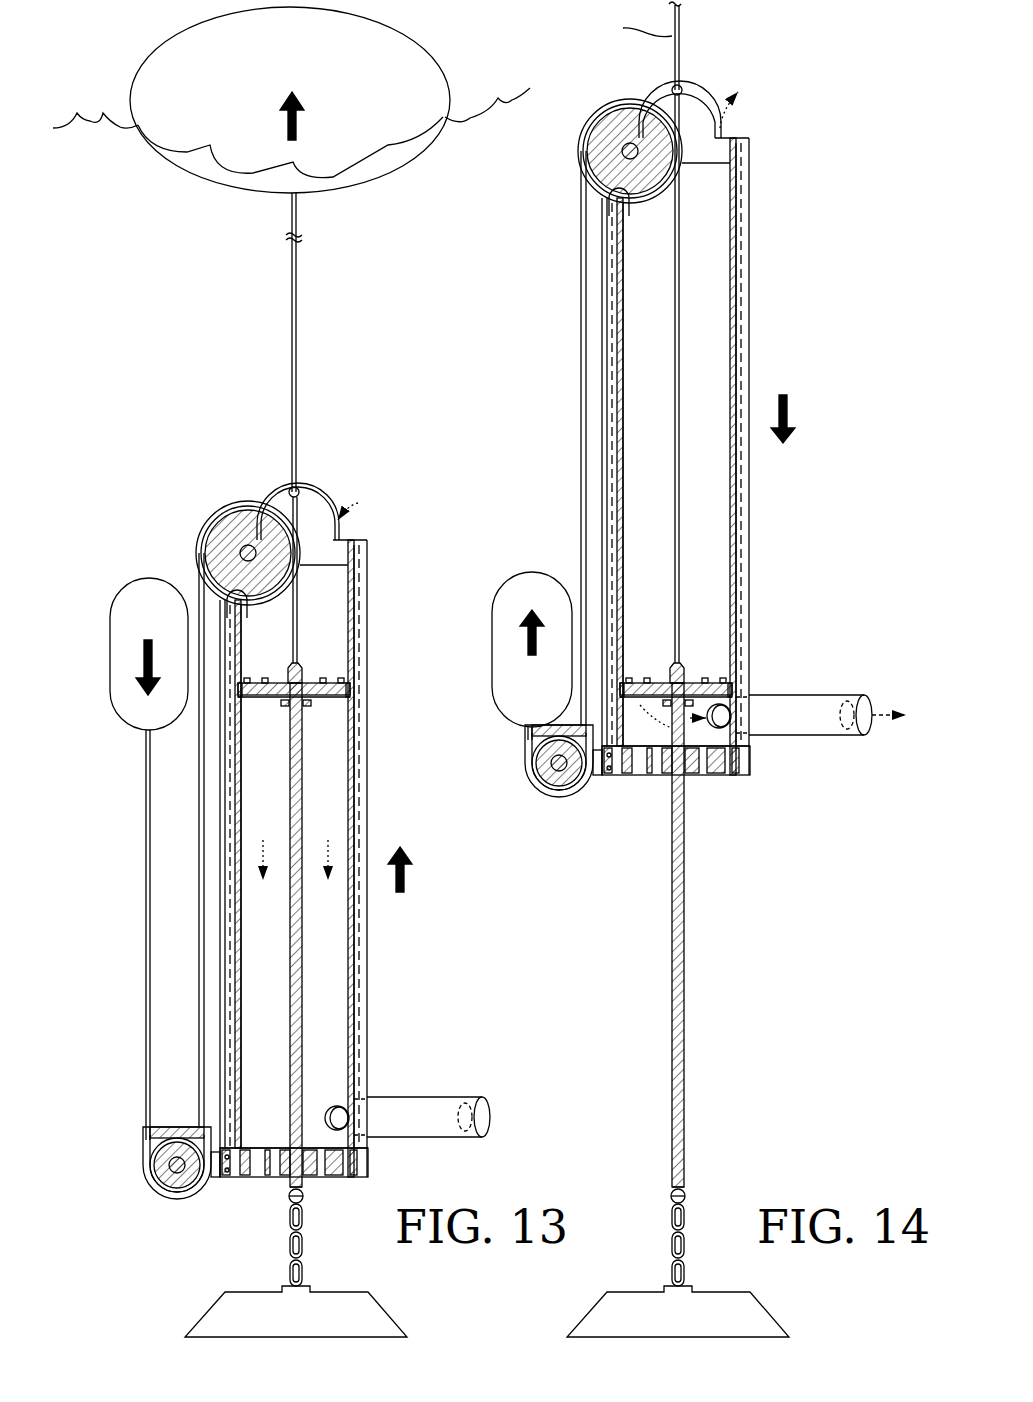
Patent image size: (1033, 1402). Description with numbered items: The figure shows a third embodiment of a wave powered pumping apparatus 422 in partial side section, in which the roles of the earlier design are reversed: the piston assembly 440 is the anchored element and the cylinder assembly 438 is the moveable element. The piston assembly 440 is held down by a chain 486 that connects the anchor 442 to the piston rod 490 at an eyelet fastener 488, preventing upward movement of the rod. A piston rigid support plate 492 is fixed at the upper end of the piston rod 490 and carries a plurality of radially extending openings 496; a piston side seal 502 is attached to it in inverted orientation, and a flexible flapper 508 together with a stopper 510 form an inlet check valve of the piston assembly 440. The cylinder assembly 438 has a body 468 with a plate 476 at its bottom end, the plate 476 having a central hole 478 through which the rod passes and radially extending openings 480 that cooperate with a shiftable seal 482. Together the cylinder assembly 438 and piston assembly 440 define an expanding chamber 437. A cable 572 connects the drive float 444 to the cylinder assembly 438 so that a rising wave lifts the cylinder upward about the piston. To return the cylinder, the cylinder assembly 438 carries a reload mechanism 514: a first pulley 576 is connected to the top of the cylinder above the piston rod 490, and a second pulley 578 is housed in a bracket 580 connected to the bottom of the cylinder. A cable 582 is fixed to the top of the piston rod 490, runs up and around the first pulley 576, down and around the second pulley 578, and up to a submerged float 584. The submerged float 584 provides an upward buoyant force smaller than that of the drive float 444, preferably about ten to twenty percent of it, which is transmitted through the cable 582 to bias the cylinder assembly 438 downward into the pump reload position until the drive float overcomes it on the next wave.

In FIG. 13, the drive float 444 is at (163, 58).
In FIG. 13, the cable 572 is at (292, 358).
In FIG. 13, the wave powered pumping apparatus 422 is at (172, 538).
In FIG. 14, the wave powered pumping apparatus 422 is at (788, 538).
In FIG. 13, the first pulley 576 is at (217, 535).
In FIG. 14, the first pulley 576 is at (615, 125).
In FIG. 13, the submerged float 584 is at (118, 580).
In FIG. 14, the submerged float 584 is at (525, 580).
In FIG. 13, the cylinder assembly 438 is at (365, 630).
In FIG. 14, the cylinder assembly 438 is at (750, 285).
In FIG. 13, the body 468 is at (352, 1027).
In FIG. 14, the body 468 is at (740, 340).
In FIG. 13, the piston assembly 440 is at (322, 976).
In FIG. 14, the piston assembly 440 is at (703, 940).
In FIG. 13, the expanding chamber 437 is at (318, 808).
In FIG. 14, the expanding chamber 437 is at (648, 736).
In FIG. 13, the radially extending openings 496 is at (303, 668).
In FIG. 14, the radially extending openings 496 is at (700, 672).
In FIG. 13, the piston side seal 502 is at (330, 685).
In FIG. 14, the piston side seal 502 is at (722, 680).
In FIG. 13, the piston rigid support plate 492 is at (326, 698).
In FIG. 14, the piston rigid support plate 492 is at (706, 676).
In FIG. 13, the flexible flapper 508 is at (312, 705).
In FIG. 14, the flexible flapper 508 is at (705, 692).
In FIG. 13, the stopper 510 is at (304, 714).
In FIG. 14, the stopper 510 is at (694, 701).
In FIG. 13, the piston rod 490 is at (303, 918).
In FIG. 14, the piston rod 490 is at (685, 885).
In FIG. 13, the reload mechanism 514 is at (133, 843).
In FIG. 14, the reload mechanism 514 is at (547, 538).
In FIG. 13, the cable 582 is at (147, 935).
In FIG. 14, the cable 582 is at (590, 355).
In FIG. 13, the shiftable seal 482 is at (314, 1124).
In FIG. 14, the shiftable seal 482 is at (698, 740).
In FIG. 13, the plate 476 is at (275, 1170).
In FIG. 14, the plate 476 is at (713, 775).
In FIG. 13, the radially extending openings 480 is at (320, 1170).
In FIG. 14, the radially extending openings 480 is at (699, 770).
In FIG. 13, the central hole 478 is at (288, 1180).
In FIG. 14, the central hole 478 is at (668, 783).
In FIG. 13, the second pulley 578 is at (153, 1168).
In FIG. 14, the second pulley 578 is at (541, 770).
In FIG. 13, the bracket 580 is at (215, 1170).
In FIG. 14, the bracket 580 is at (596, 772).
In FIG. 13, the eyelet fastener 488 is at (305, 1198).
In FIG. 14, the eyelet fastener 488 is at (672, 1196).
In FIG. 13, the chain 486 is at (305, 1228).
In FIG. 14, the chain 486 is at (672, 1225).
In FIG. 13, the anchor 442 is at (222, 1312).
In FIG. 14, the anchor 442 is at (605, 1308).